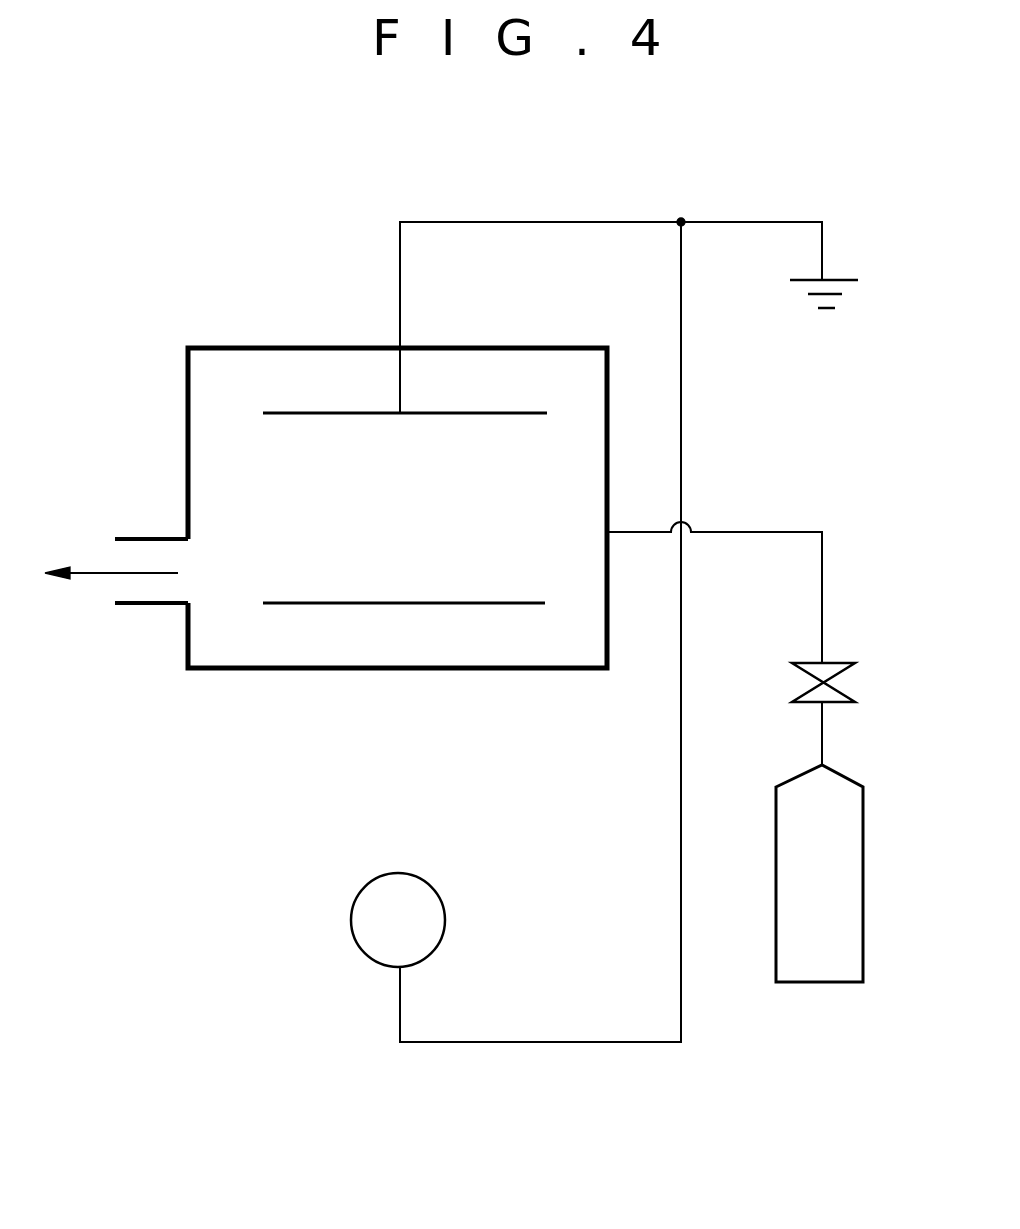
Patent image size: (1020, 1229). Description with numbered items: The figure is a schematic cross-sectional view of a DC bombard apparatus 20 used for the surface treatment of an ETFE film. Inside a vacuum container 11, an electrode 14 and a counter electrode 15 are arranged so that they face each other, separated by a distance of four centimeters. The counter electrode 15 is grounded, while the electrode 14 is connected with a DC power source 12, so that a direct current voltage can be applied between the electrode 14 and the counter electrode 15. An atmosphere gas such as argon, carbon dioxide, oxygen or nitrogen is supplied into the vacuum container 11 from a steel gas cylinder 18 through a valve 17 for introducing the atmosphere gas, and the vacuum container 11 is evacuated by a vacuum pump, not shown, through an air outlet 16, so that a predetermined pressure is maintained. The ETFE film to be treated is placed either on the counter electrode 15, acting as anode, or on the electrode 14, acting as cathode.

The DC bombard apparatus 20 is at (302, 282).
The vacuum container 11 is at (188, 372).
The DC power source 12 is at (446, 920).
The electrode 14 is at (268, 607).
The counter electrode 15 is at (283, 411).
The air outlet 16 is at (126, 538).
The valve 17 is at (845, 692).
The steel gas cylinder 18 is at (819, 873).